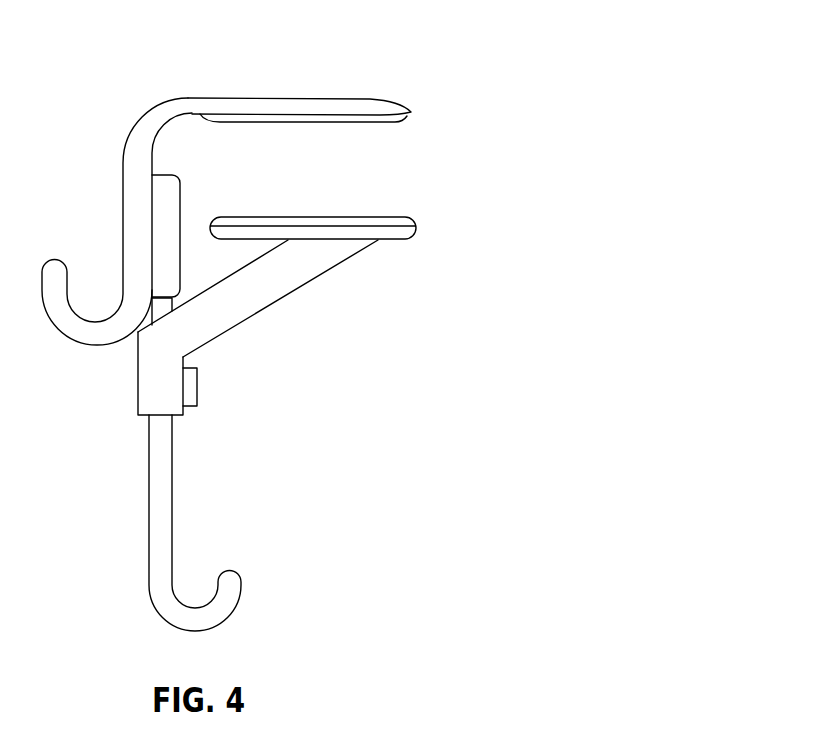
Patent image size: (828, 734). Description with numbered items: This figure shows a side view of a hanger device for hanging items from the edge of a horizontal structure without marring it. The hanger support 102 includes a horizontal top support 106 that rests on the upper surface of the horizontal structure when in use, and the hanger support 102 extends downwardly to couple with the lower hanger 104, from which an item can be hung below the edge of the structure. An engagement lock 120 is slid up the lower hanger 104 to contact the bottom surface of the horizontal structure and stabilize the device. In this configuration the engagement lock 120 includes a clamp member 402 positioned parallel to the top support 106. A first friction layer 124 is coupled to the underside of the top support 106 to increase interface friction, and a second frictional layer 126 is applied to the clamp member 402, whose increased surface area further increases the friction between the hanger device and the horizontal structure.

The hanger support 102 is at (142, 117).
The lower hanger 104 is at (146, 510).
The top support 106 is at (367, 100).
The engagement lock 120 is at (256, 313).
The first friction layer 124 is at (398, 118).
The second frictional layer 126 is at (396, 218).
The clamp member 402 is at (393, 240).